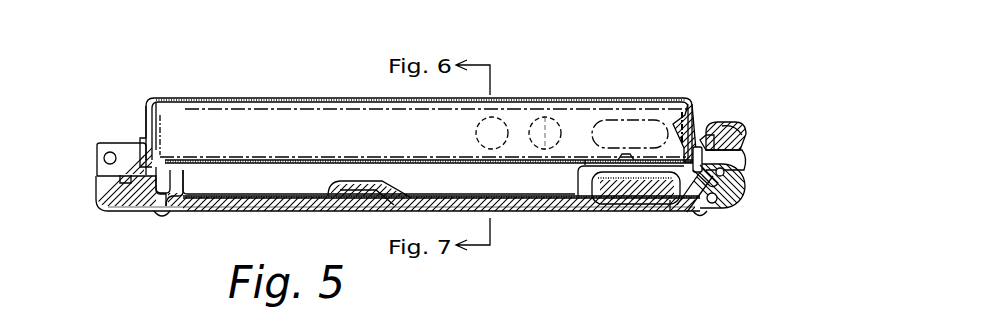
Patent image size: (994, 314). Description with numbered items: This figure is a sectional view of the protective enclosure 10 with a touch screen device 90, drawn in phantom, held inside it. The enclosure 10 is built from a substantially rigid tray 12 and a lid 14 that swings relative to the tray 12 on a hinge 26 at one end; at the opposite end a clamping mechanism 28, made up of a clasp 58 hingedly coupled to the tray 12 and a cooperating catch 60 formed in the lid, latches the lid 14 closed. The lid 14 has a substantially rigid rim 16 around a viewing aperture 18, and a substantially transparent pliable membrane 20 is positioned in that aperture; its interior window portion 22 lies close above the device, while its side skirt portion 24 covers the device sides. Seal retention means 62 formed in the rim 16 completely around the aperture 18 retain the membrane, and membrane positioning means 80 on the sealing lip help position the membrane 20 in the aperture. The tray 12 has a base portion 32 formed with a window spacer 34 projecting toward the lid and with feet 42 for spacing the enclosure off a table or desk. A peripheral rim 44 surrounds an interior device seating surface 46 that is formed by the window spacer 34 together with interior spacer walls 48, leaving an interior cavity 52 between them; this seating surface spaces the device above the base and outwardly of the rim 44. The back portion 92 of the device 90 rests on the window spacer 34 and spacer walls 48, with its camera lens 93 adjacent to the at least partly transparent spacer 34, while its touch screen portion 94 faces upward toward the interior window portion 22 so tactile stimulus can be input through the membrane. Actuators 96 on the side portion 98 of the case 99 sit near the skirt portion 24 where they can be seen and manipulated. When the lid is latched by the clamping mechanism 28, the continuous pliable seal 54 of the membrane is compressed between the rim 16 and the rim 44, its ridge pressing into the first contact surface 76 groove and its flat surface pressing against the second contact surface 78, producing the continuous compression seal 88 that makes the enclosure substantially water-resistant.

The protective enclosure 10 is at (142, 41).
The tray 12 is at (110, 210).
The lid 14 is at (146, 118).
The rim 16 is at (737, 147).
The viewing aperture 18 is at (680, 135).
The membrane 20 is at (252, 100).
The interior window portion 22 is at (345, 102).
The side skirt portion 24 is at (701, 140).
The hinge 26 is at (108, 152).
The clamping mechanism 28 is at (722, 215).
The base portion 32 is at (500, 212).
The window spacer 34 is at (640, 157).
The feet 42 is at (162, 214).
The peripheral rim 44 is at (724, 173).
The interior device seating surface 46 is at (590, 158).
The interior spacer walls 48 is at (162, 178).
The interior cavity 52 is at (379, 180).
The pliable seal 54 is at (702, 180).
The clasp 58 is at (730, 130).
The catch 60 is at (742, 138).
The seal retention means 62 is at (709, 142).
The first contact surface 76 is at (692, 210).
The second contact surface 78 is at (690, 195).
The membrane positioning means 80 is at (687, 173).
The continuous compression seal 88 is at (668, 215).
The touch screen device 90 is at (160, 178).
The back portion 92 is at (306, 160).
The camera lens 93 is at (624, 160).
The touch screen portion 94 is at (553, 116).
The actuators 96 is at (540, 118).
The side portion 98 is at (430, 143).
The case 99 is at (160, 128).